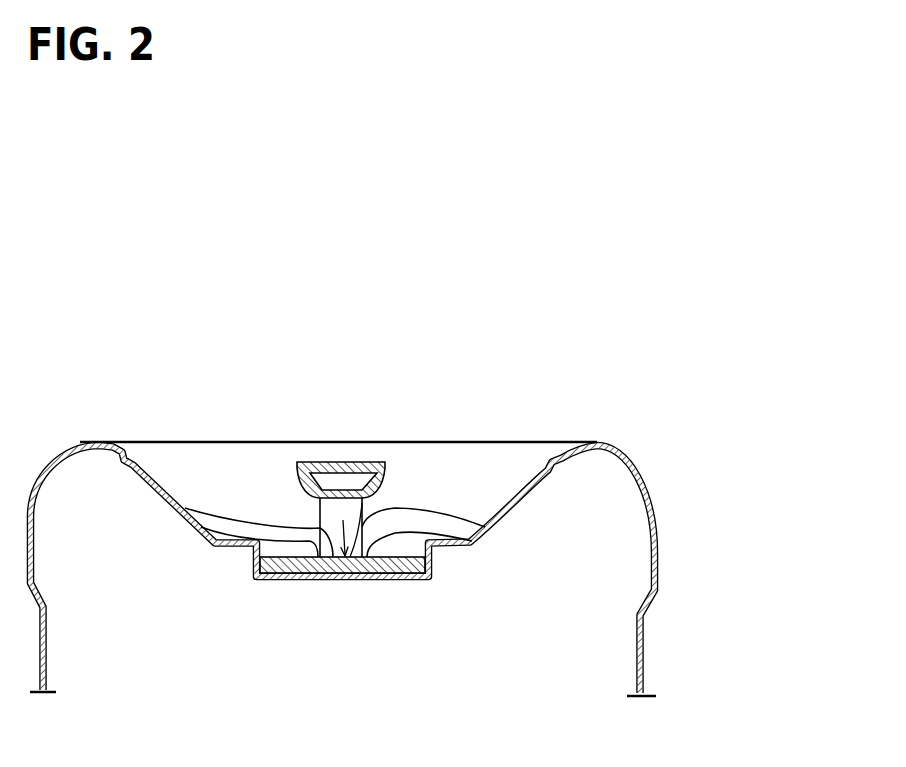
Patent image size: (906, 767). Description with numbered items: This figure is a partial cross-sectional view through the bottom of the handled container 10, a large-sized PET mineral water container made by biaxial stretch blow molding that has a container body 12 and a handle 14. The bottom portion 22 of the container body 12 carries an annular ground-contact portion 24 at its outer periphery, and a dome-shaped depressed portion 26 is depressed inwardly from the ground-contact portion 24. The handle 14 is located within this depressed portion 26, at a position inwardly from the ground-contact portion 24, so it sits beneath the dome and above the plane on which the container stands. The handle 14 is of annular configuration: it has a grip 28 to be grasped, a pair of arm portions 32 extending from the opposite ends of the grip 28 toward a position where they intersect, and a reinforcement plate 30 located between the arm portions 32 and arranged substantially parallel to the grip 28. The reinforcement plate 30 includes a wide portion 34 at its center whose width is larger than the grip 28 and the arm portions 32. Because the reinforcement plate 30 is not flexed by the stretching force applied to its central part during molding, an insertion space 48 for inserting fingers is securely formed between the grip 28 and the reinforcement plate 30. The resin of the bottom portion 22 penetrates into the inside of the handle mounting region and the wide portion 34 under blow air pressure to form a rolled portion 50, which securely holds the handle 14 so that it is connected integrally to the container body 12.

The handled container 10 is at (748, 448).
The container body 12 is at (646, 668).
The handle 14 is at (392, 462).
The bottom portion 22 is at (557, 425).
The ground-contact portion 24 is at (593, 444).
The depressed portion 26 is at (192, 457).
The grip 28 is at (340, 461).
The reinforcement plate 30 is at (380, 502).
The arm portions 32 is at (337, 518).
The wide portion 34 is at (287, 582).
The insertion space 48 is at (380, 502).
The rolled portion 50 is at (355, 585).